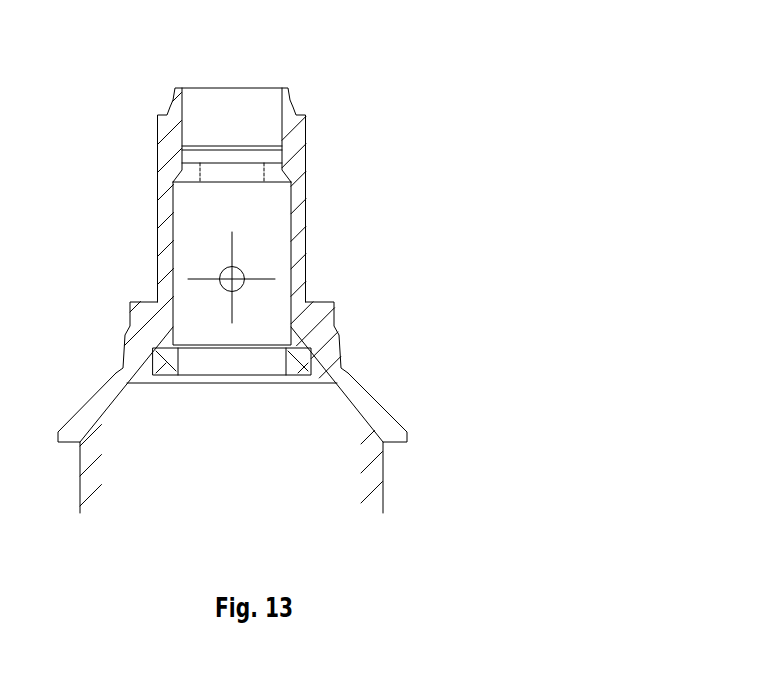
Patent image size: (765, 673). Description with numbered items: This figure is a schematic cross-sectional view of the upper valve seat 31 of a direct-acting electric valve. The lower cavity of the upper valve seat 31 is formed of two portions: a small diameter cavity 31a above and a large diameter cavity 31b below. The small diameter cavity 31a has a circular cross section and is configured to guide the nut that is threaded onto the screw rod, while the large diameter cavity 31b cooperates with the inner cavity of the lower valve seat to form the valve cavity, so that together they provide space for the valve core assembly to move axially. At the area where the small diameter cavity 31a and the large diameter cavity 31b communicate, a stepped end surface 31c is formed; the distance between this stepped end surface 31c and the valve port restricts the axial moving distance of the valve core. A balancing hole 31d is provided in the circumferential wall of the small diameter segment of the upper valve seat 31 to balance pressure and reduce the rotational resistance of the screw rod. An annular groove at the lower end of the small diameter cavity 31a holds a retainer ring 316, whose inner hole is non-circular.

The upper valve seat 31 is at (160, 240).
The small diameter cavity 31a is at (265, 232).
The large diameter cavity 31b is at (265, 462).
The stepped end surface 31c is at (257, 122).
The balancing hole 31d is at (240, 280).
The retainer ring 316 is at (312, 356).